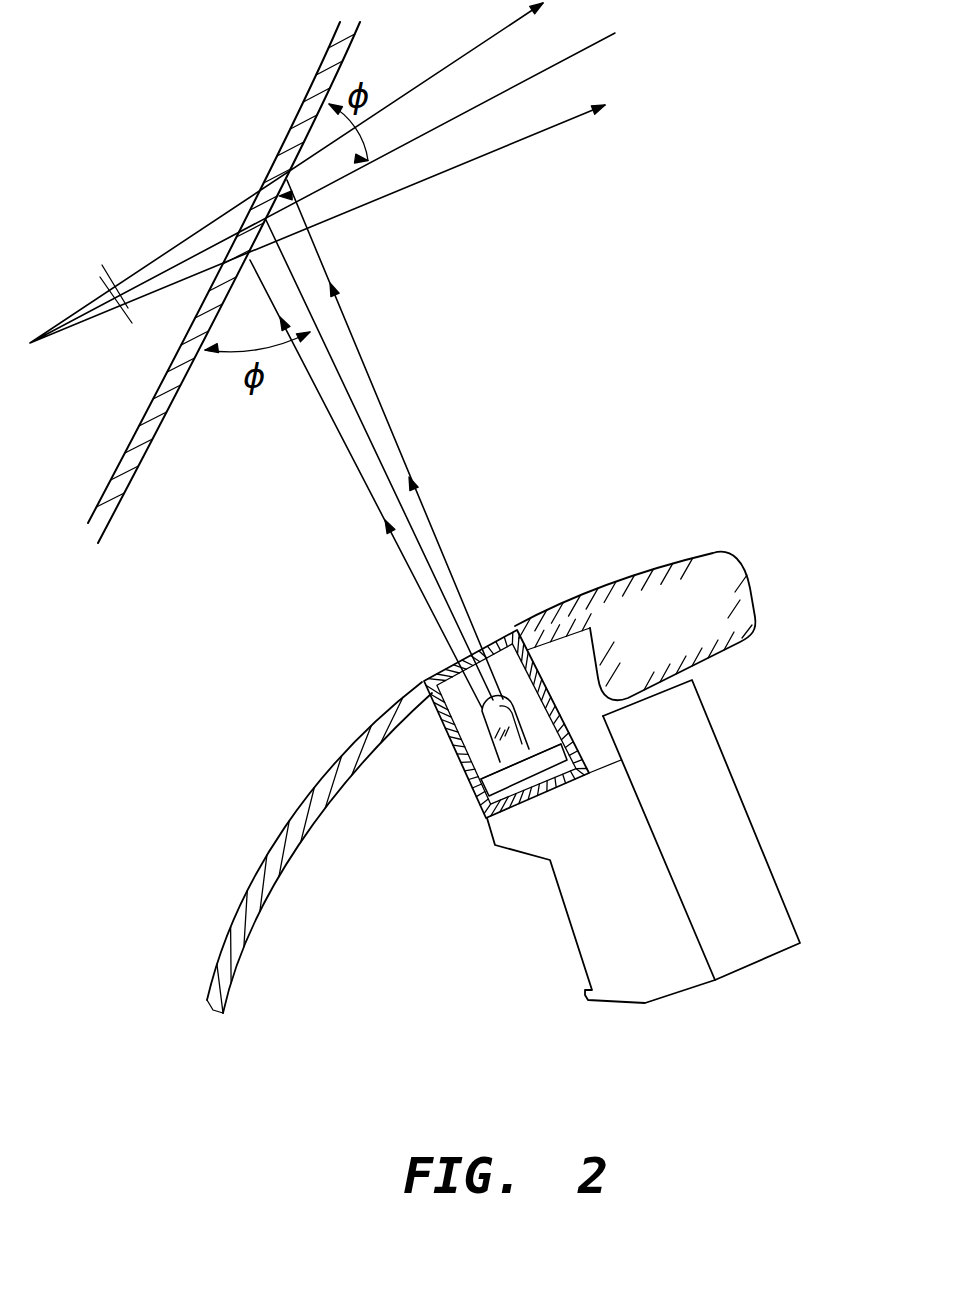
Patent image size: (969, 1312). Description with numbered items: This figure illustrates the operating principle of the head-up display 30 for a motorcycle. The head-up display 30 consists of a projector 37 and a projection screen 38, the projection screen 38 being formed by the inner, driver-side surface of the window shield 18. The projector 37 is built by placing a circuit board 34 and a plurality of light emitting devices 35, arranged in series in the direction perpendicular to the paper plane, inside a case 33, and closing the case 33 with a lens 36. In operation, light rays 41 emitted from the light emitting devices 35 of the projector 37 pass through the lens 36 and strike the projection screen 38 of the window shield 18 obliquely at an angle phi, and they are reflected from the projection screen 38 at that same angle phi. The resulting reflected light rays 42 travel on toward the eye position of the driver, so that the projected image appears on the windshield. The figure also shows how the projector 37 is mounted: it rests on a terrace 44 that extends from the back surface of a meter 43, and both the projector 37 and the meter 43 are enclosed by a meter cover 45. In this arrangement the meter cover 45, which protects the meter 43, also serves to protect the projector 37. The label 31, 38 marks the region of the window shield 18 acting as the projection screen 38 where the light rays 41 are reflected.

The window shield 18 is at (318, 70).
The reflected light rays 42 is at (493, 38).
The light emitting element optical axis 31 is at (430, 247).
The projection screen 38 is at (279, 196).
The light rays 41 is at (373, 405).
The head-up display 30 is at (268, 620).
The case 33 is at (445, 748).
The lens 36 is at (510, 630).
The light emitting devices 35 is at (482, 719).
The terrace 44 is at (493, 845).
The circuit board 34 is at (517, 805).
The projector 37 is at (532, 612).
The meter cover 45 is at (615, 585).
The meter 43 is at (748, 826).